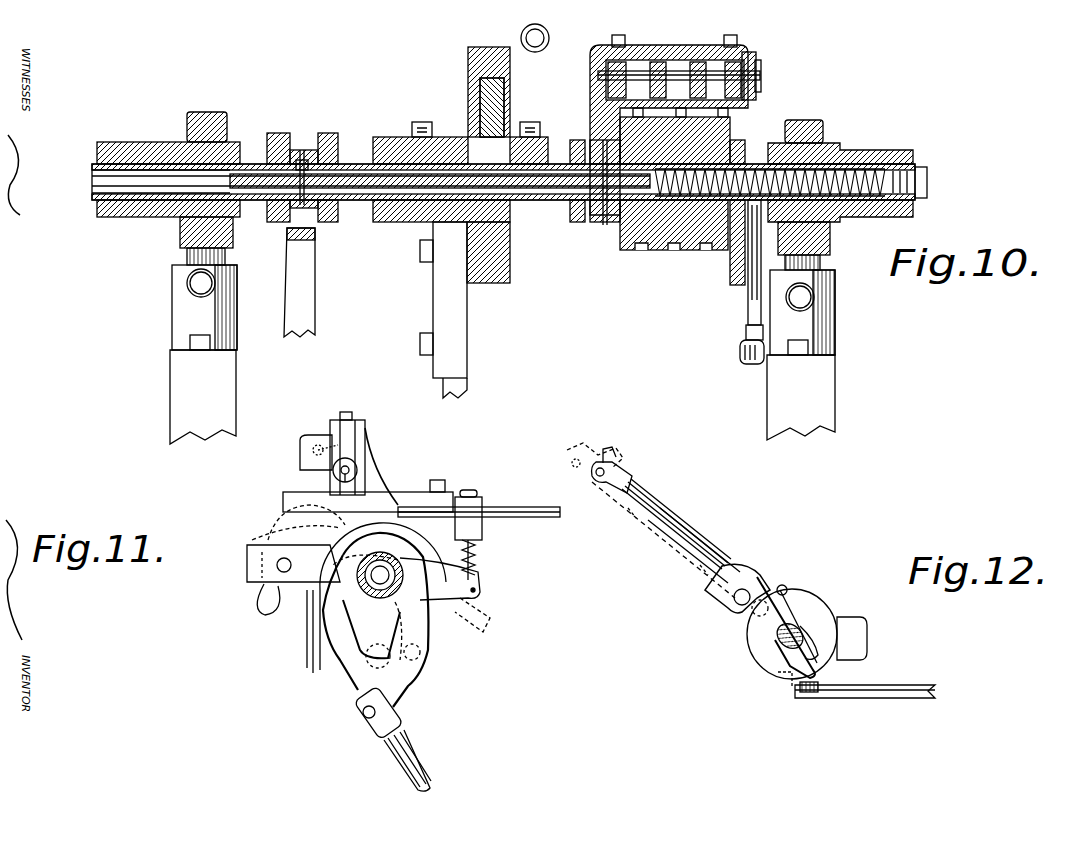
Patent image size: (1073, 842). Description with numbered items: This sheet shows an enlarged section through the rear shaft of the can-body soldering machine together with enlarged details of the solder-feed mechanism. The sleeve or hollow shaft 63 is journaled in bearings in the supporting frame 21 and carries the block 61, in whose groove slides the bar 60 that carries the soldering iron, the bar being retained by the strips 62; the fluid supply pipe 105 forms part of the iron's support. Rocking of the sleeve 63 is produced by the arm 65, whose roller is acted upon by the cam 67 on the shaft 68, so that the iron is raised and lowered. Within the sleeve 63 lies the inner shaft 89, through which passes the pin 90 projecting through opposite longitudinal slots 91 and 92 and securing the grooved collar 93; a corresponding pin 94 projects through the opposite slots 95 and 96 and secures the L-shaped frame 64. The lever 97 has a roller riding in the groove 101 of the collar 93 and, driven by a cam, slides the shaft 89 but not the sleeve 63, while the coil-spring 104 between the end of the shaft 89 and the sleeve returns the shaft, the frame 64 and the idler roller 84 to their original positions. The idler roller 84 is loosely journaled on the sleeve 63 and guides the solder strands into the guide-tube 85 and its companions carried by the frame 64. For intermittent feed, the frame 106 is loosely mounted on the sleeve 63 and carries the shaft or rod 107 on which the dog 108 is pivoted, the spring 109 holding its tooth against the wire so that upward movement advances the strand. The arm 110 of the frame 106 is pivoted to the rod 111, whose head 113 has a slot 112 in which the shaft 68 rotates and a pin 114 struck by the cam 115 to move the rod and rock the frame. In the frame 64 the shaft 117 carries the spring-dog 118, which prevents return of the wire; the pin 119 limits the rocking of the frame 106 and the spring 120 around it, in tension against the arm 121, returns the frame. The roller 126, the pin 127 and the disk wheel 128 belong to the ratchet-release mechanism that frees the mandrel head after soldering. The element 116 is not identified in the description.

In FIG. 10, the supporting frame 21 is at (180, 382).
In FIG. 10, the bar 60 is at (500, 108).
In FIG. 10, the block 61 is at (488, 268).
In FIG. 10, the strips 62 is at (508, 47).
In FIG. 10, the sleeve or hollow shaft 63 is at (352, 160).
In FIG. 11, the sleeve or hollow shaft 63 is at (386, 560).
In FIG. 10, the L-shaped frame 64 is at (590, 140).
In FIG. 11, the L-shaped frame 64 is at (290, 492).
In FIG. 10, the arm 65 is at (455, 355).
In FIG. 12, the cam 67 is at (865, 638).
In FIG. 12, the shaft 68 is at (800, 628).
In FIG. 10, the idler roller 84 is at (740, 128).
In FIG. 11, the idler roller 84 is at (432, 572).
In FIG. 11, the guide-tube 85 is at (505, 508).
In FIG. 10, the inner shaft 89 is at (356, 190).
In FIG. 10, the pin 90 is at (302, 160).
In FIG. 10, the longitudinal slot 91 is at (280, 158).
In FIG. 10, the longitudinal slot 92 is at (270, 222).
In FIG. 10, the grooved collar 93 is at (328, 222).
In FIG. 10, the pin 94 is at (594, 226).
In FIG. 10, the slot 95 is at (574, 145).
In FIG. 10, the slot 96 is at (570, 216).
In FIG. 10, the lever 97 is at (305, 316).
In FIG. 10, the groove 101 is at (298, 150).
In FIG. 10, the coil-spring 104 is at (858, 160).
In FIG. 10, the fluid supply pipe 105 is at (540, 18).
In FIG. 11, the frame 106 is at (308, 600).
In FIG. 11, the shaft or rod 107 is at (278, 566).
In FIG. 11, the dog 108 is at (290, 540).
In FIG. 11, the spring 109 is at (300, 520).
In FIG. 11, the arm 110 is at (398, 680).
In FIG. 12, the arm 110 is at (625, 466).
In FIG. 10, the rod 111 is at (745, 352).
In FIG. 11, the rod 111 is at (415, 755).
In FIG. 12, the rod 111 is at (660, 560).
In FIG. 12, the slot 112 is at (812, 672).
In FIG. 12, the head 113 is at (800, 566).
In FIG. 12, the pin 114 is at (748, 618).
In FIG. 12, the cam 115 is at (786, 590).
In FIG. 10, the block 116 is at (762, 40).
In FIG. 11, the block 116 is at (360, 440).
In FIG. 10, the shaft 117 is at (672, 76).
In FIG. 11, the shaft 117 is at (345, 460).
In FIG. 10, the spring-dog 118 is at (646, 60).
In FIG. 11, the spring-dog 118 is at (392, 490).
In FIG. 11, the pin 119 is at (478, 548).
In FIG. 11, the spring 120 is at (475, 556).
In FIG. 11, the arm 121 is at (472, 600).
In FIG. 12, the roller 126 is at (806, 692).
In FIG. 12, the pin 127 is at (782, 684).
In FIG. 12, the disk wheel 128 is at (770, 660).